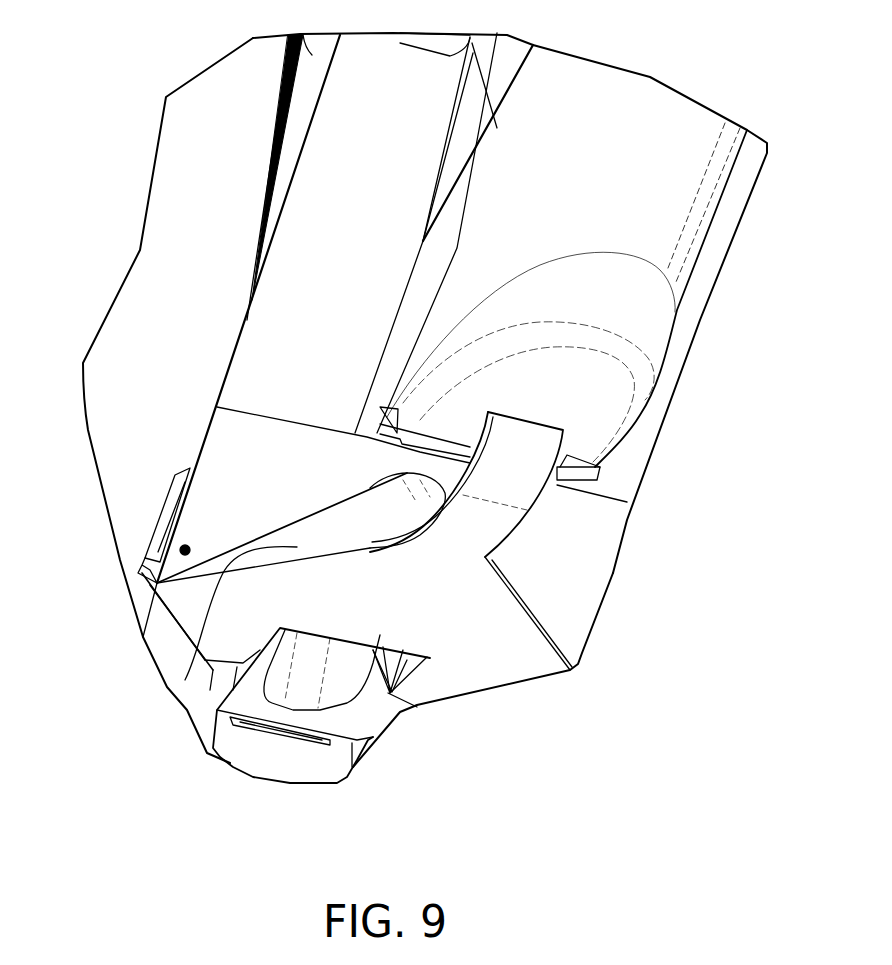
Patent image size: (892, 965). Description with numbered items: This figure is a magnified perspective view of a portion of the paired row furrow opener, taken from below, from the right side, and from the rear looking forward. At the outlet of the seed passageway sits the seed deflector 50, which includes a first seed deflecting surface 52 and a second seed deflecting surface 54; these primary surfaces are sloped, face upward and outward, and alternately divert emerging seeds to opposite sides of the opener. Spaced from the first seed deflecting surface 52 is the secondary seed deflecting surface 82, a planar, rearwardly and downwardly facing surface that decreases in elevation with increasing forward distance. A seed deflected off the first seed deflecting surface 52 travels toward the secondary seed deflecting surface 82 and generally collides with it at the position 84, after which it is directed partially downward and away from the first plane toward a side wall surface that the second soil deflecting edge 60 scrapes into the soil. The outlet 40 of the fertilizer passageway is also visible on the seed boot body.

The seed deflector 50 is at (340, 468).
The secondary seed deflecting surface 82 is at (240, 443).
The second soil deflecting edge 60 is at (160, 517).
The position 84 is at (185, 550).
The first seed deflecting surface 52 is at (185, 680).
The outlet 40 is at (333, 680).
The second seed deflecting surface 54 is at (500, 577).